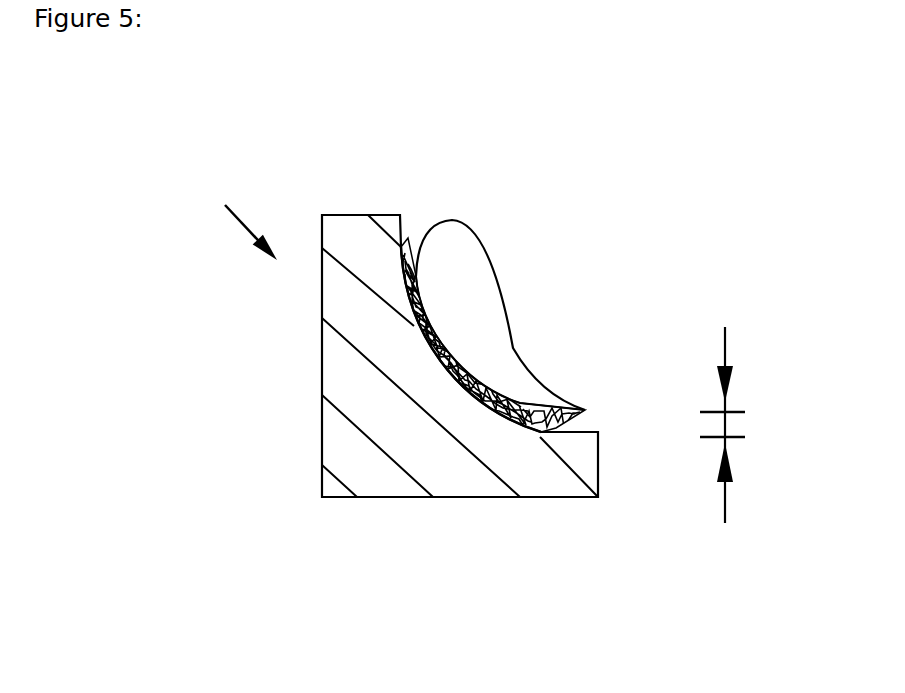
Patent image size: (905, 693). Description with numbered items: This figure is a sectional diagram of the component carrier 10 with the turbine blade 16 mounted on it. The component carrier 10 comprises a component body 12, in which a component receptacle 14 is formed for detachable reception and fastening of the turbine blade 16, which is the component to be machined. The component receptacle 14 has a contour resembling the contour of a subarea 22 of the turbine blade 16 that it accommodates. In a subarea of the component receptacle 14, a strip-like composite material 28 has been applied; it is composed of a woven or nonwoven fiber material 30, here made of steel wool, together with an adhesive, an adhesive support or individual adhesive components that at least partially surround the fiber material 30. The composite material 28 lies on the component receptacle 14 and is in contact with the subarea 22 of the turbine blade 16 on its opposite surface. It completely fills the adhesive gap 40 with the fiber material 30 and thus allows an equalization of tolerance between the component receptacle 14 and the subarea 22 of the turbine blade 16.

The component carrier 10 is at (214, 184).
The component body 12 is at (560, 485).
The component receptacle 14 is at (549, 392).
The turbine blade 16 is at (488, 315).
The subarea of turbine blade 22 is at (460, 344).
The composite material 28 is at (493, 279).
The fiber material 30 is at (405, 268).
The adhesive gap 40 is at (745, 425).